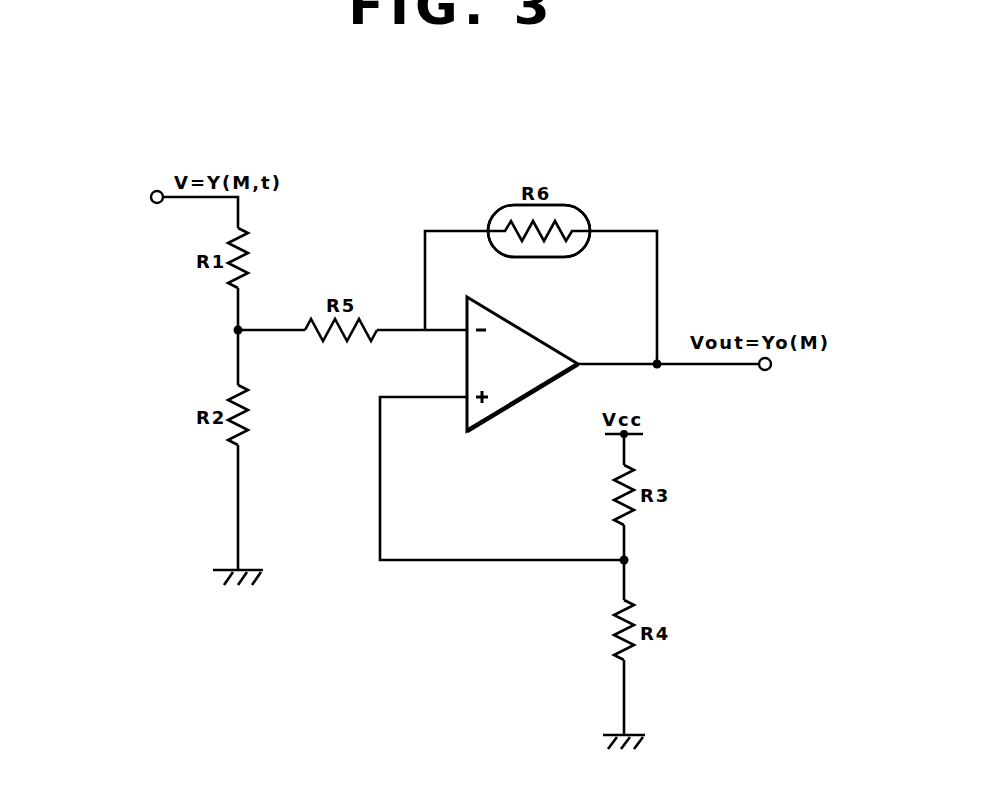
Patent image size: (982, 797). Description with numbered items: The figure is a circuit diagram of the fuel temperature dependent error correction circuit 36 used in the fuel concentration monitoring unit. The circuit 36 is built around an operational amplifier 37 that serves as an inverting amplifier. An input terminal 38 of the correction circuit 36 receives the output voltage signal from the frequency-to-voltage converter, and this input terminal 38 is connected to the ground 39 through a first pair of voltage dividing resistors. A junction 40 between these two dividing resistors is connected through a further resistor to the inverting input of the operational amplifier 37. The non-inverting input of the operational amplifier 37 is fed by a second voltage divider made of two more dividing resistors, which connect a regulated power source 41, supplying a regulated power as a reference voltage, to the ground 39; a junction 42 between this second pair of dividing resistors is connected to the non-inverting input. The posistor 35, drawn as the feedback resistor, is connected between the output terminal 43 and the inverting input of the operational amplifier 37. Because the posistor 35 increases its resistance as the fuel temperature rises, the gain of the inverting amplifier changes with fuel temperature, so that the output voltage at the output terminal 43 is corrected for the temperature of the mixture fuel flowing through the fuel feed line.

The posistor 35 is at (492, 208).
The fuel temperature dependent error correction circuit 36 is at (650, 185).
The operational amplifier 37 is at (510, 406).
The input terminal 38 is at (151, 197).
The ground 39 is at (212, 572).
The junction 40 is at (238, 330).
The regulated power source 41 is at (620, 436).
The junction 42 is at (636, 560).
The output terminal 43 is at (766, 371).